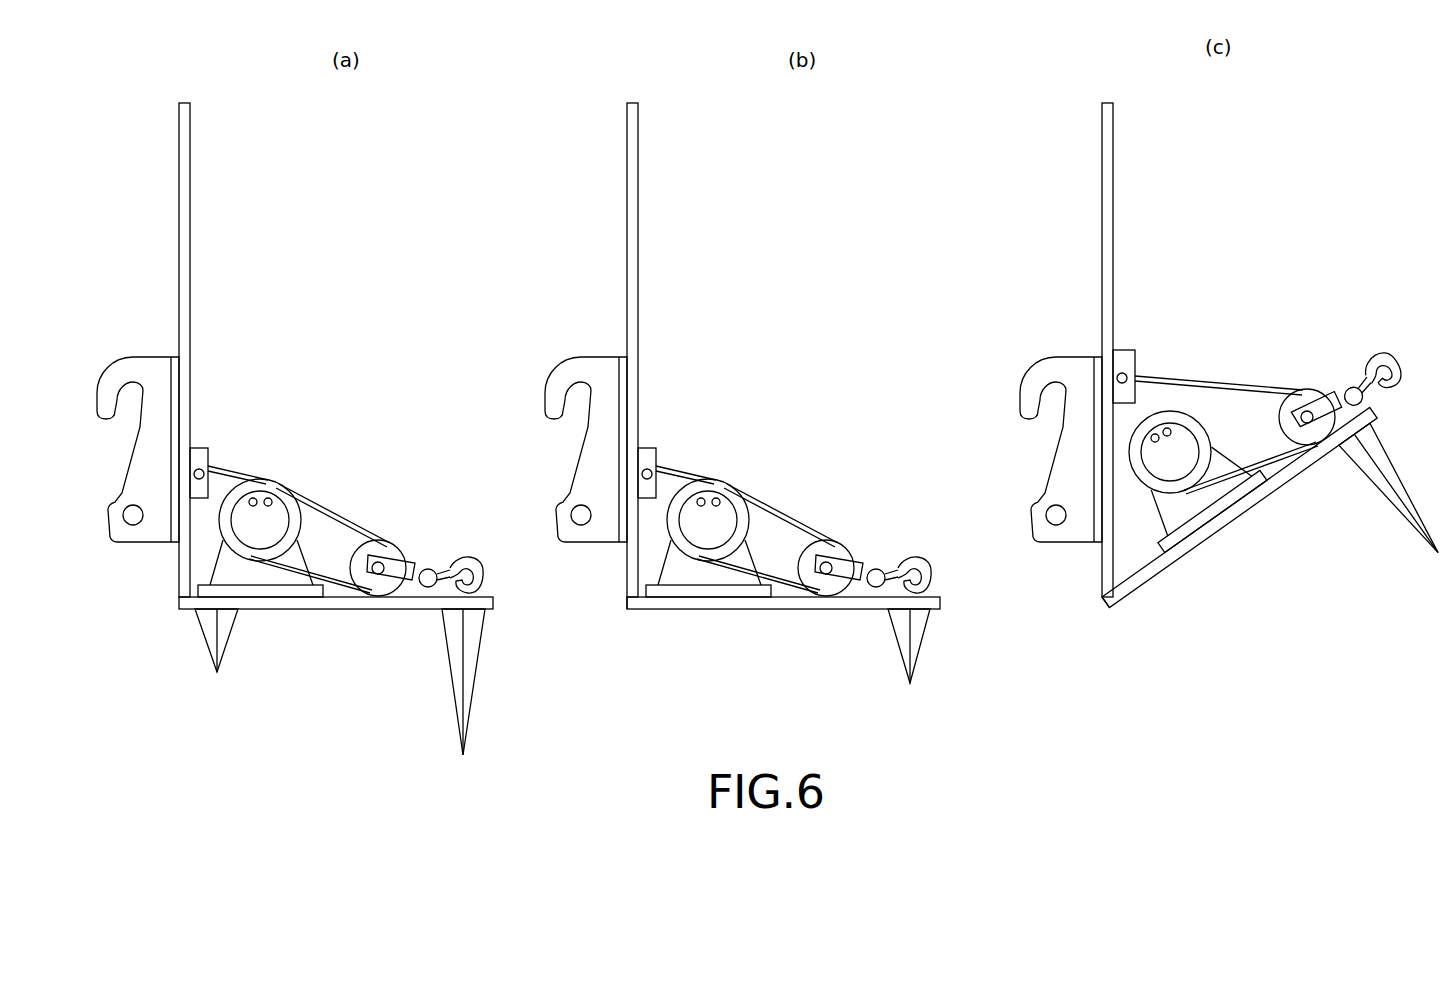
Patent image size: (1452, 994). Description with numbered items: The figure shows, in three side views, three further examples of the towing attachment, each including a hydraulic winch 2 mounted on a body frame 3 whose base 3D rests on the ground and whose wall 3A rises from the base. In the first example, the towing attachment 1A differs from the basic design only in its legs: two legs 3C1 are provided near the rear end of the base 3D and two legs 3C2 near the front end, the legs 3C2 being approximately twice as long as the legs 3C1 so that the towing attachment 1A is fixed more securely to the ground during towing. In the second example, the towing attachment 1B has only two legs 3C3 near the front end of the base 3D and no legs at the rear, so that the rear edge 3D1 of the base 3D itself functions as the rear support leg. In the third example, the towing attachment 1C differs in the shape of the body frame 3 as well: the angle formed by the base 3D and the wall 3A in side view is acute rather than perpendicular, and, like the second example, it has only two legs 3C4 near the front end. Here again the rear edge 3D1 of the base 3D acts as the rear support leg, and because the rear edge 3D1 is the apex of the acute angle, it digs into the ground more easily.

The towing attachment 1A is at (309, 205).
The towing attachment 1B is at (757, 205).
The towing attachment 1C is at (1241, 242).
The hydraulic winch 2 is at (287, 477).
The body frame 3 is at (192, 221).
The wall 3A is at (1112, 283).
The legs 3C1 is at (216, 636).
The legs 3C2 is at (466, 656).
The legs 3C3 is at (912, 633).
The legs 3C4 is at (1380, 497).
The base 3D is at (328, 600).
The rear edge 3D1 is at (624, 610).